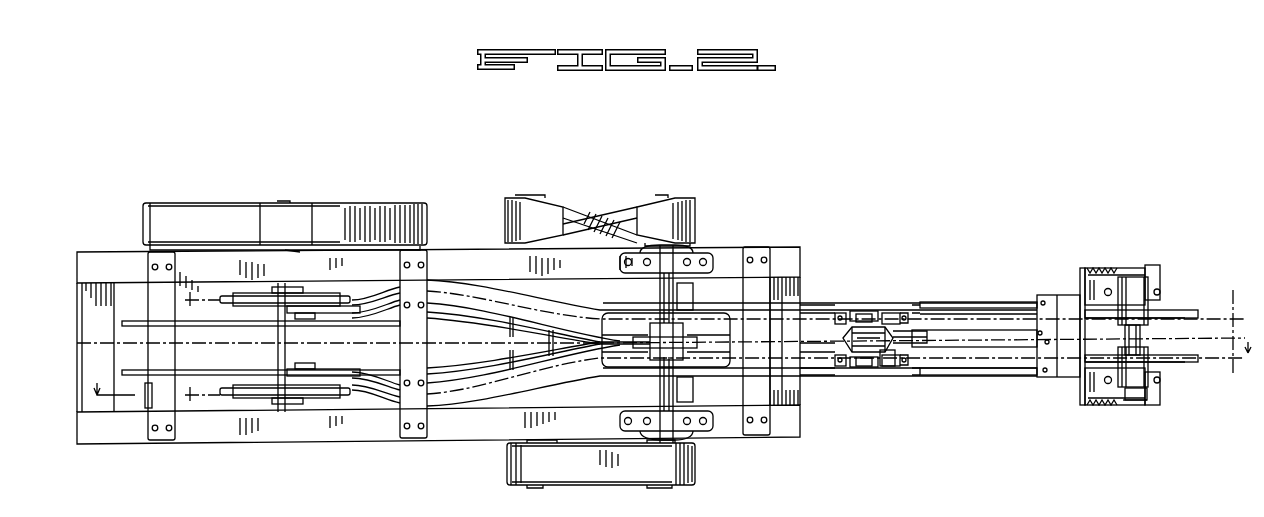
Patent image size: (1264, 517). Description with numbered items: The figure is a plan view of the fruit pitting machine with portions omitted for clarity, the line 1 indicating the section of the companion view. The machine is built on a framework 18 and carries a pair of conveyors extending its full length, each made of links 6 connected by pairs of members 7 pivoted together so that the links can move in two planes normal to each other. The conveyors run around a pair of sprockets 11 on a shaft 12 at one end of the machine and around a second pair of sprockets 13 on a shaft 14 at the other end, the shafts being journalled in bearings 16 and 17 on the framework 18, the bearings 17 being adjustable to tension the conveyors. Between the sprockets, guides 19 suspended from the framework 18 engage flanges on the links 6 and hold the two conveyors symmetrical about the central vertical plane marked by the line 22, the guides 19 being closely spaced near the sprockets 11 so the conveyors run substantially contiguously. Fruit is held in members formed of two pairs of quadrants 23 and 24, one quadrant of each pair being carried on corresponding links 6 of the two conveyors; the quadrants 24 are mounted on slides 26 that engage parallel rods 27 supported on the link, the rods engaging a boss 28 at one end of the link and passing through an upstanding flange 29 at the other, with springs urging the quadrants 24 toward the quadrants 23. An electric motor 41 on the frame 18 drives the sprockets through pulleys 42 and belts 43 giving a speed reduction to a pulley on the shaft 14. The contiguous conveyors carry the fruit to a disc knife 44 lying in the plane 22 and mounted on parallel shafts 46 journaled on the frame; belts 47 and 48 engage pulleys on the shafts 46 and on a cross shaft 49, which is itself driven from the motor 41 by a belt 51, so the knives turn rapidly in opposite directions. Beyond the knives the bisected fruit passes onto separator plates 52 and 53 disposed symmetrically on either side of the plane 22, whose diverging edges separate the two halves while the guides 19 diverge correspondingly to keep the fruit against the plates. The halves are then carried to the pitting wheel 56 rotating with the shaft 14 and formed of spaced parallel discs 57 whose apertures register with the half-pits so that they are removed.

The section line 1 is at (670, 377).
The links 6 is at (866, 314).
The members 7 is at (840, 313).
The sprockets 11 is at (1188, 309).
The shaft 12 is at (1140, 340).
The sprockets 13 is at (240, 386).
The shaft 14 is at (295, 203).
The bearings 16 is at (1138, 382).
The bearings 17 is at (292, 249).
The framework 18 is at (196, 443).
The guides 19 is at (356, 313).
The central vertical plane 22 is at (361, 344).
The quadrants 23 is at (843, 338).
The quadrants 24 is at (908, 340).
The slides 26 is at (883, 366).
The parallel rods 27 is at (858, 311).
The boss 28 is at (852, 370).
The flange 29 is at (899, 313).
The electric motor 41 is at (710, 315).
The pulleys 42 is at (226, 408).
The belts 43 is at (205, 400).
The disc knife 44 is at (720, 340).
The parallel shafts 46 is at (693, 388).
The belt 47 is at (596, 213).
The belt 48 is at (612, 472).
The cross shaft 49 is at (540, 203).
The belt 51 is at (590, 290).
The separator plate 52 is at (478, 373).
The separator plate 53 is at (465, 313).
The wheel 56 is at (148, 344).
The discs 57 is at (313, 369).